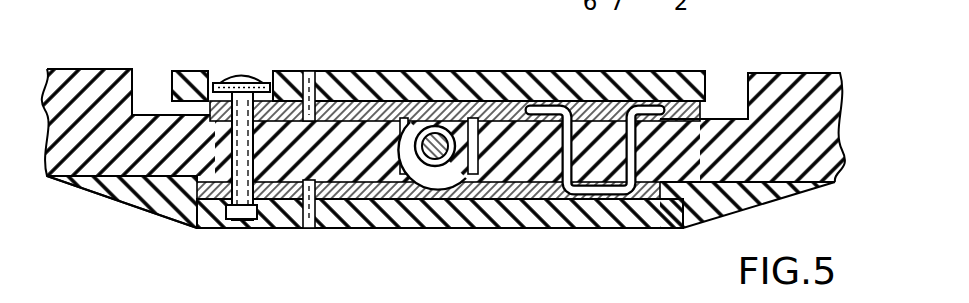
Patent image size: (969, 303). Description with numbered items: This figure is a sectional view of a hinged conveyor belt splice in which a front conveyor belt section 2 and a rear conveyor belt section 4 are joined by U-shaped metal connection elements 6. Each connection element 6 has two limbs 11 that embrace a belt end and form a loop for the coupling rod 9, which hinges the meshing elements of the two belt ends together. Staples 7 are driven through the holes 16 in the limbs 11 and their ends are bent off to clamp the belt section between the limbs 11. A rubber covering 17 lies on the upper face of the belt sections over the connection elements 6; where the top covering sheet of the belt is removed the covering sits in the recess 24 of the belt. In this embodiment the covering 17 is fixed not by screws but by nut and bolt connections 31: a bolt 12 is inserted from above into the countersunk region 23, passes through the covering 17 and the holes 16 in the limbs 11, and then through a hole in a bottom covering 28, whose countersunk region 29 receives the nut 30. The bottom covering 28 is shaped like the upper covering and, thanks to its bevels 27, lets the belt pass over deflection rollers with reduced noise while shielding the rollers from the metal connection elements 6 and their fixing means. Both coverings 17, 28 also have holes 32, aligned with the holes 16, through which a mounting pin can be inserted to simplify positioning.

The front conveyor belt section 2 is at (768, 63).
The rear conveyor belt section 4 is at (117, 50).
The connection element 6 is at (393, 236).
The staple 7 is at (595, 206).
The coupling rod 9 is at (448, 118).
The limb 11 is at (365, 103).
The bolt 12 is at (222, 155).
The hole 16 is at (345, 72).
The covering 17 is at (550, 74).
The countersunk region 23 is at (263, 72).
The recess 24 is at (719, 95).
The bevel 27 is at (115, 199).
The bottom covering 28 is at (520, 219).
The countersunk region 29 is at (251, 221).
The nut 30 is at (229, 236).
The nut and bolt connection 31 is at (165, 216).
The hole 32 is at (312, 72).